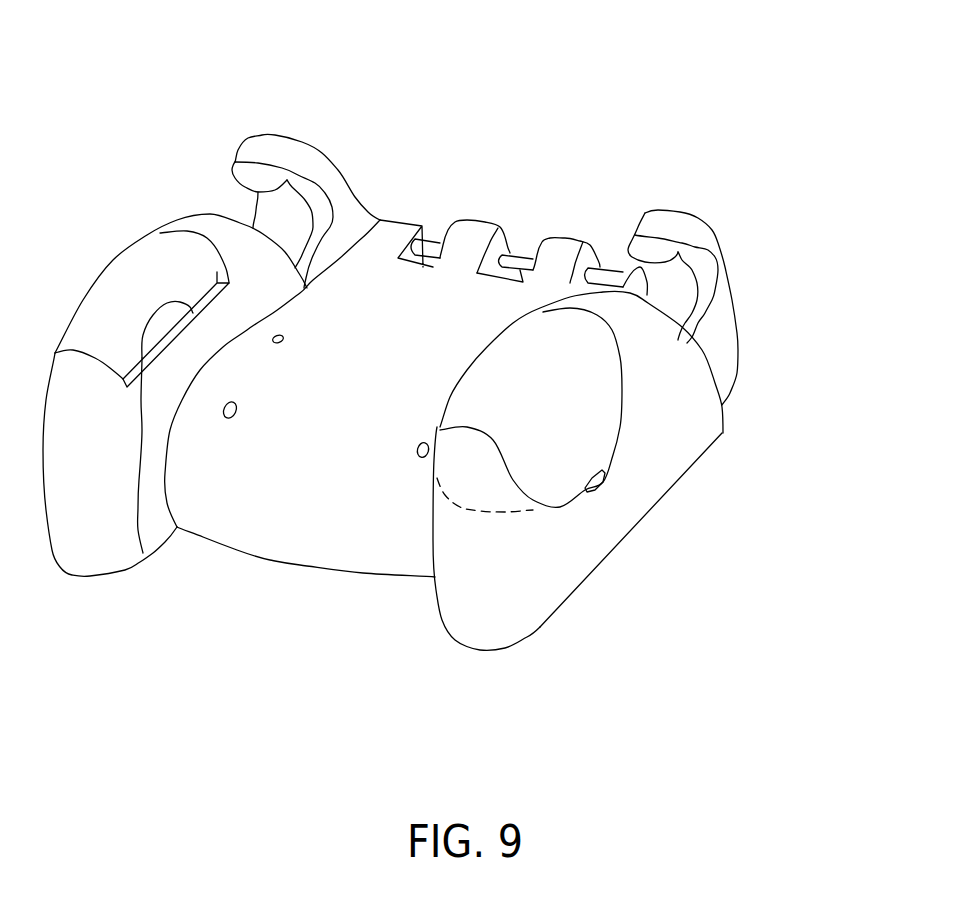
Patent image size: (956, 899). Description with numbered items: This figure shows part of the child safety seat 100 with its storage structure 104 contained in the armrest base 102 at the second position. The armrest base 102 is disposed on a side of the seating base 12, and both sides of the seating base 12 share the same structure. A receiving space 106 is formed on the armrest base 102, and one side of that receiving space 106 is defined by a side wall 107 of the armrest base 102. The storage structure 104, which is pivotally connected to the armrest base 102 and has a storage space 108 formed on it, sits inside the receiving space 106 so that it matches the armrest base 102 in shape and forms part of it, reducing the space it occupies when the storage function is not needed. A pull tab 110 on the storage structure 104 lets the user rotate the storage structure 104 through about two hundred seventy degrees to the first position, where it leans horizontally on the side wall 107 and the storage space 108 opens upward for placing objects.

The child safety seat 100 is at (451, 404).
The seating base 12 is at (303, 513).
The armrest base 102 is at (82, 553).
The storage structure 104 is at (127, 292).
The receiving space 106 is at (485, 487).
The side wall 107 is at (143, 553).
The storage space 108 is at (165, 317).
The pull tab 110 is at (600, 485).